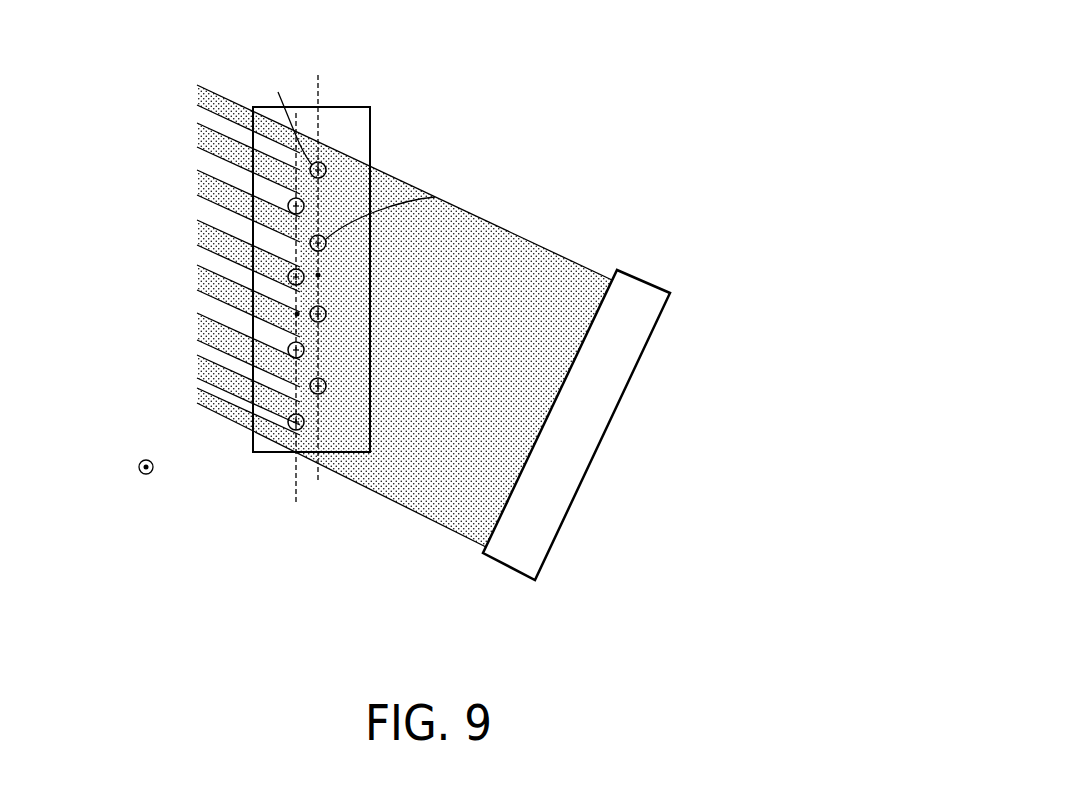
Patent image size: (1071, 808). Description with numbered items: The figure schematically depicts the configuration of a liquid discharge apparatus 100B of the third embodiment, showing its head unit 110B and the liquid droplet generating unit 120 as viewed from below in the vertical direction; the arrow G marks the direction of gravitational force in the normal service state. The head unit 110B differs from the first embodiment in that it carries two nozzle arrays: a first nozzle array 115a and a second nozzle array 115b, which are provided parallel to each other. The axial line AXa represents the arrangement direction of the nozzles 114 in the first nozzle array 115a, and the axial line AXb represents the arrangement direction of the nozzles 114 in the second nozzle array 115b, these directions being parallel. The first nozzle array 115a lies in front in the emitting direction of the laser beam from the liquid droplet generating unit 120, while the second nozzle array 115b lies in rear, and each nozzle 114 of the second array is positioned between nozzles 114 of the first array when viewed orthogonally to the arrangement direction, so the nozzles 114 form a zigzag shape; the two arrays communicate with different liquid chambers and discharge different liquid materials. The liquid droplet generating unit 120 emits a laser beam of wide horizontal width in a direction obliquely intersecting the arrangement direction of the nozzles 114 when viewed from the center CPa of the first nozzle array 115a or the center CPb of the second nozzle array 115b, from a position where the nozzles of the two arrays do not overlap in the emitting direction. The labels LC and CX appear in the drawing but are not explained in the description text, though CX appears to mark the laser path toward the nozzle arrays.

The liquid discharge apparatus 100B is at (702, 65).
The head unit 110B is at (338, 107).
The nozzle 114 is at (327, 247).
The first nozzle array 115a is at (332, 157).
The second nozzle array 115b is at (307, 193).
The liquid droplet generating unit 120 is at (645, 277).
The chief ray LC is at (285, 113).
The lens optical axis CX is at (435, 197).
The center of the first nozzle array CPa is at (318, 275).
The center of the second nozzle array CPb is at (297, 314).
The axial line AXa is at (318, 477).
The axial line AXb is at (293, 476).
The arrow representing direction of gravitational force G is at (135, 468).